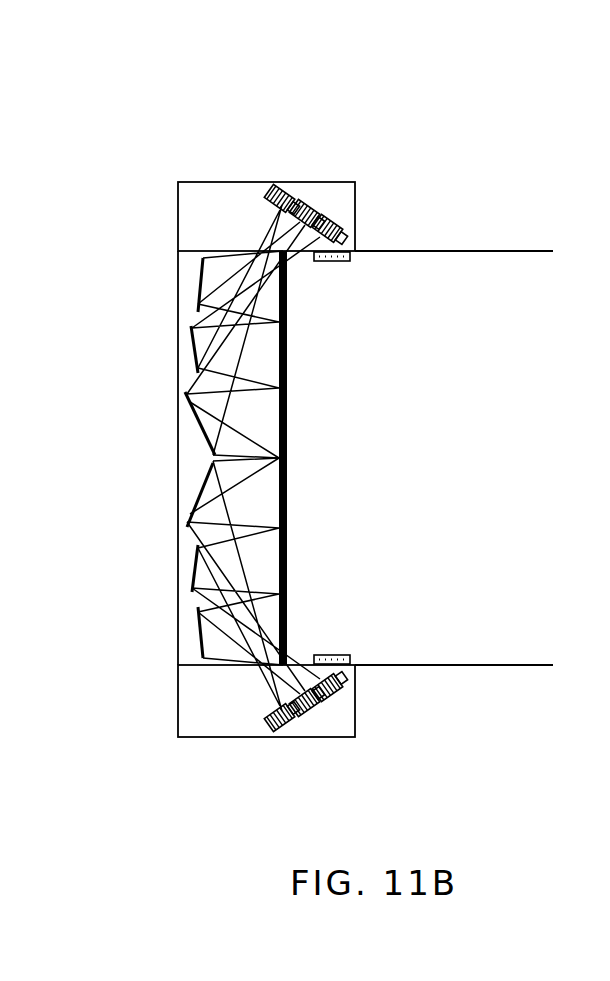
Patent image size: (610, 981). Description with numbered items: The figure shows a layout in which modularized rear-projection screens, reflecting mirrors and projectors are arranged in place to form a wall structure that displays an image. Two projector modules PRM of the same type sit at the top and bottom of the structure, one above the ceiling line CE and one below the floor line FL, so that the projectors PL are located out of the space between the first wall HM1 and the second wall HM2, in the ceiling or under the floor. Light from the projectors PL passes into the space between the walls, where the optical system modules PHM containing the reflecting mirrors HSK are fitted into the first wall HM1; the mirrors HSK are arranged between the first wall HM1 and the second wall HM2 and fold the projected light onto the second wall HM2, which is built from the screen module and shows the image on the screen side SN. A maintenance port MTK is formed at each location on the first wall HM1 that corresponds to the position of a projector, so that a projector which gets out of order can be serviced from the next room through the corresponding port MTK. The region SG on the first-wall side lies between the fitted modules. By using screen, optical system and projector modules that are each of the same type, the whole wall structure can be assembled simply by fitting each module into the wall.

The projector module PRM is at (221, 182).
The projector PL is at (322, 195).
The maintenance port MTK is at (338, 262).
The ceiling CE is at (467, 250).
The screen SN is at (423, 284).
The side glass SG is at (129, 458).
The reflecting mirror HSK is at (182, 343).
The optical system module PHM is at (185, 418).
The first wall HM1 is at (178, 548).
The second wall HM2 is at (287, 545).
The floor FL is at (478, 666).